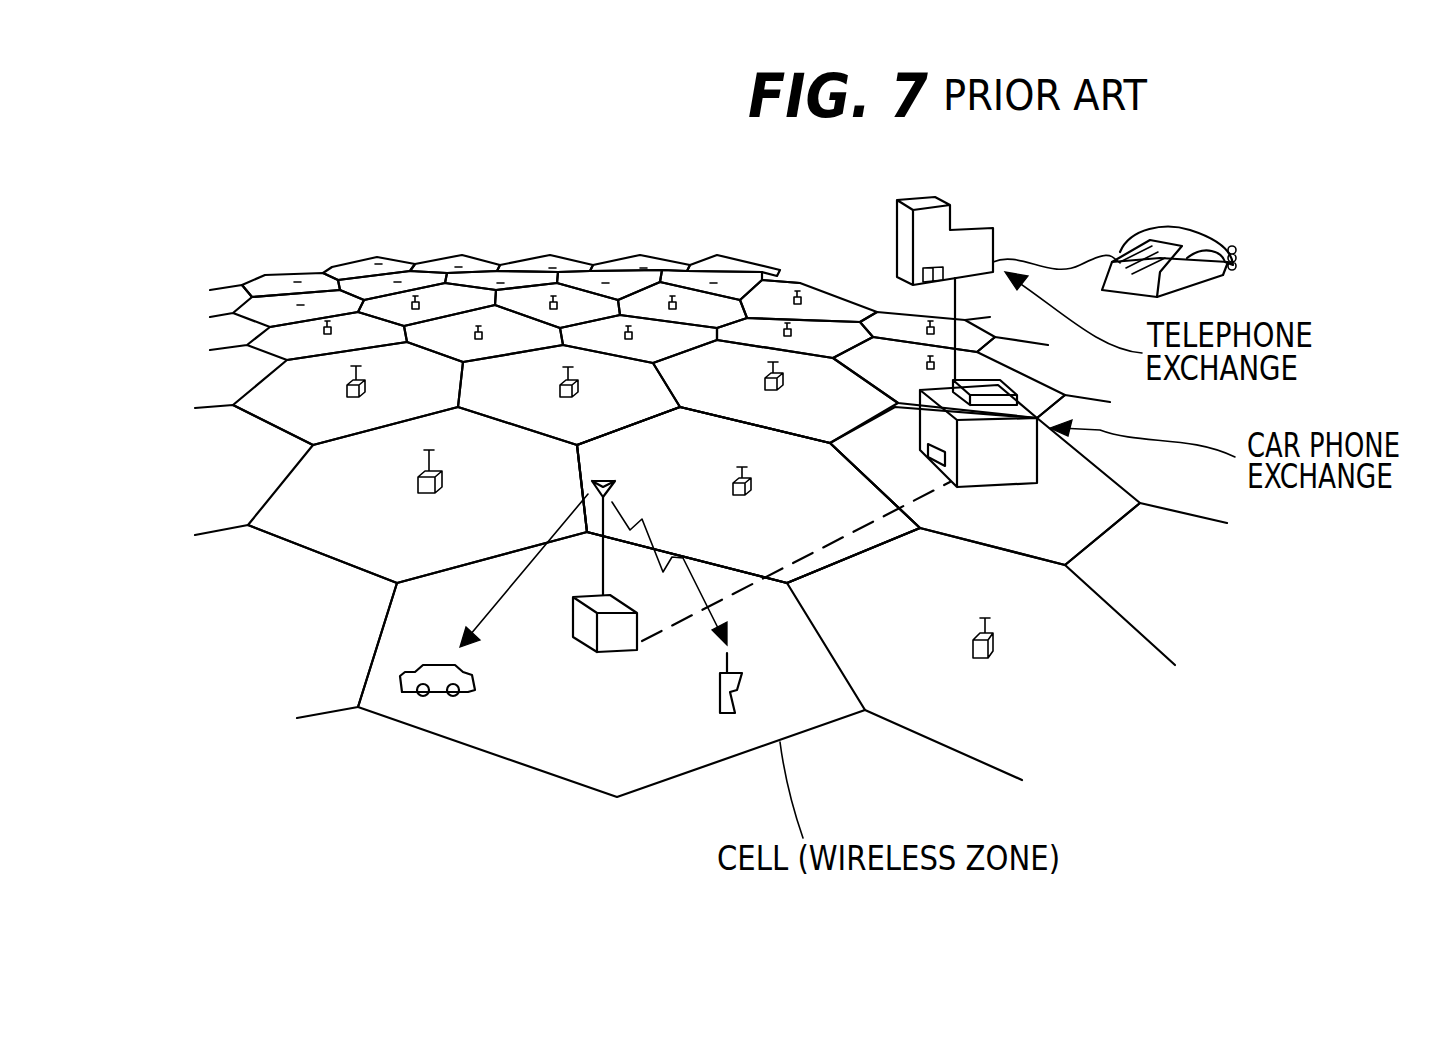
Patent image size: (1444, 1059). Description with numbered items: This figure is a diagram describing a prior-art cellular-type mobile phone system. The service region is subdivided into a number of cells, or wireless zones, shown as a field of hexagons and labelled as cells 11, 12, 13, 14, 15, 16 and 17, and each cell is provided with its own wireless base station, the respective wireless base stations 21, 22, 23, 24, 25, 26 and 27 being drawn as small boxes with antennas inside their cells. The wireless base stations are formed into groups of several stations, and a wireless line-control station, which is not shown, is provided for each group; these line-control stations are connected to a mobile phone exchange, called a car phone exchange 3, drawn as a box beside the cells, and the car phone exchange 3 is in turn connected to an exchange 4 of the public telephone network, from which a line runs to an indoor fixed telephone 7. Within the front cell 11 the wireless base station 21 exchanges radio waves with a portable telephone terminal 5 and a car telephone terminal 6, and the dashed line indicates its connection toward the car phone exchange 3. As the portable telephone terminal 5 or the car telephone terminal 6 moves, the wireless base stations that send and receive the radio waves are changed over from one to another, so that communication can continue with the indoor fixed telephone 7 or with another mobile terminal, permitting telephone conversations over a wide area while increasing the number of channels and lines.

The cell (wireless zone) 11 is at (513, 740).
The cell (wireless zone) 12 is at (1052, 717).
The cell (wireless zone) 13 is at (357, 540).
The cell (wireless zone) 14 is at (853, 542).
The cell (wireless zone) 15 is at (288, 414).
The cell (wireless zone) 16 is at (613, 417).
The cell (wireless zone) 17 is at (850, 417).
The wireless base station 21 is at (577, 630).
The wireless base station 22 is at (997, 647).
The wireless base station 23 is at (443, 478).
The wireless base station 24 is at (753, 487).
The wireless base station 25 is at (365, 388).
The wireless base station 26 is at (578, 390).
The wireless base station 27 is at (783, 383).
The car phone exchange 3 is at (1013, 463).
The exchange 4 is at (892, 212).
The portable telephone terminal 5 is at (737, 688).
The car telephone terminal 6 is at (437, 665).
The indoor fixed telephone 7 is at (1237, 255).